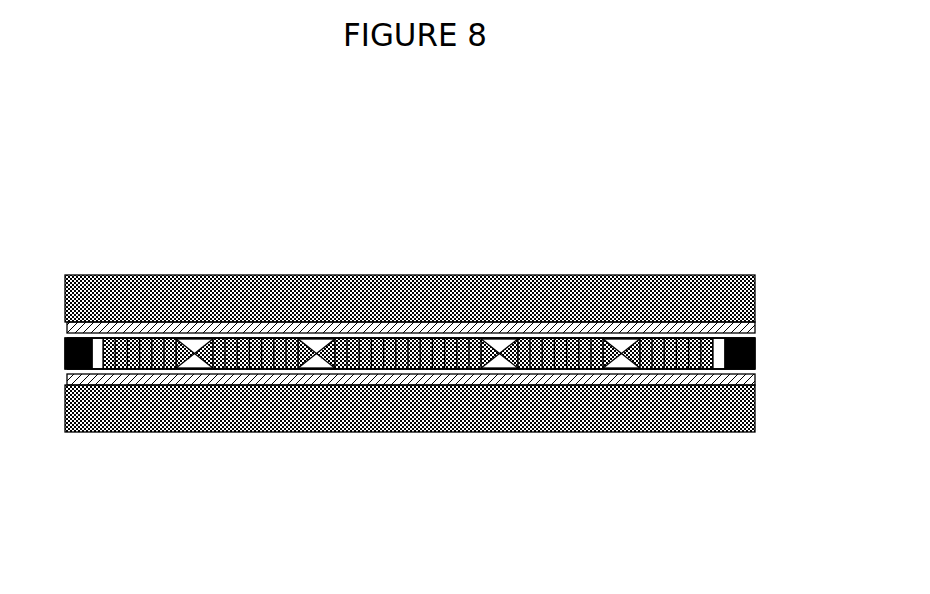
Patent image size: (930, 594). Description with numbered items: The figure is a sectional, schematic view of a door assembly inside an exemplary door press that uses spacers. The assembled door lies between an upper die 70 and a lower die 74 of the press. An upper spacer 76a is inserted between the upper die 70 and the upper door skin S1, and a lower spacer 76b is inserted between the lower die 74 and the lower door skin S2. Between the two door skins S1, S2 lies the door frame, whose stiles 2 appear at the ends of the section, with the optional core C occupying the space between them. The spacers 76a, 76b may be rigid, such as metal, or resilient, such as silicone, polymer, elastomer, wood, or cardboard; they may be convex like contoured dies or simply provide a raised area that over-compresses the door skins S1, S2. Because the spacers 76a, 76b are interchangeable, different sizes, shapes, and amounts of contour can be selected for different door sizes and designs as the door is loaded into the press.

The stile 2 is at (68, 330).
The upper die 70 is at (157, 290).
The lower die 74 is at (637, 403).
The upper spacer 76a is at (369, 323).
The lower spacer 76b is at (398, 387).
The door skin S1 is at (593, 337).
The door skin S2 is at (202, 373).
The core C is at (534, 360).